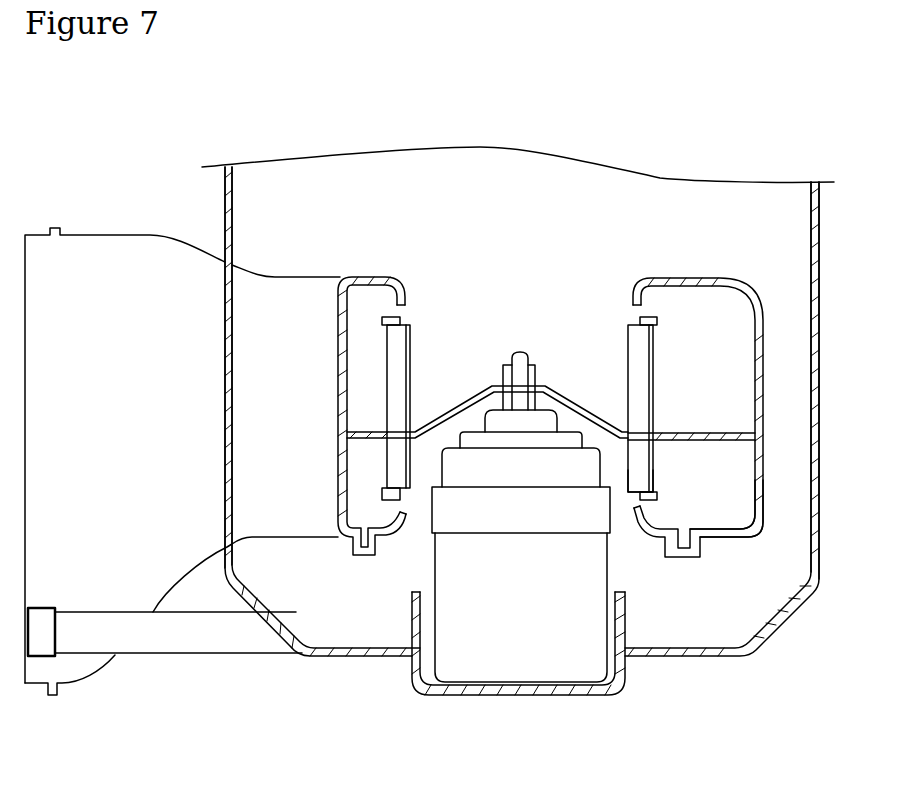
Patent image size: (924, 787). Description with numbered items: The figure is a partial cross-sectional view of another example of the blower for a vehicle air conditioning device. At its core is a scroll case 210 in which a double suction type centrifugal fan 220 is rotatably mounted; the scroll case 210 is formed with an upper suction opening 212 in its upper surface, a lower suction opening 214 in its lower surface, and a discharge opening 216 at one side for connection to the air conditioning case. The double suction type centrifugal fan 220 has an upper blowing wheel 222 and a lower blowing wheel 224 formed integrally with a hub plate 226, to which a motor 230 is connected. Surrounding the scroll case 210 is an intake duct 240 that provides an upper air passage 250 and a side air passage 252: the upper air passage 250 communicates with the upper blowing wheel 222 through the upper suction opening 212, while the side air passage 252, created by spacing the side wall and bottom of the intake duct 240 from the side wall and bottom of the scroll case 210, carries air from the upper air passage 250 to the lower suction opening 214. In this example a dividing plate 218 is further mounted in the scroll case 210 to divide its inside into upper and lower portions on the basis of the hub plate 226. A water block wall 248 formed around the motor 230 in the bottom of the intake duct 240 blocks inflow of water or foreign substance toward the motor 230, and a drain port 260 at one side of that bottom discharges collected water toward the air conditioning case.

The scroll case 210 is at (749, 534).
The upper suction opening 212 is at (410, 297).
The lower suction opening 214 is at (408, 512).
The discharge opening 216 is at (105, 250).
The dividing plate 218 is at (716, 428).
The double suction type centrifugal fan 220 is at (660, 352).
The upper blowing wheel 222 is at (640, 383).
The lower blowing wheel 224 is at (640, 483).
The hub plate 226 is at (553, 388).
The motor 230 is at (560, 657).
The intake duct 240 is at (662, 176).
The water block wall 248 is at (628, 617).
The upper air passage 250 is at (540, 219).
The side air passage 252 is at (265, 383).
The drain port 260 is at (220, 640).